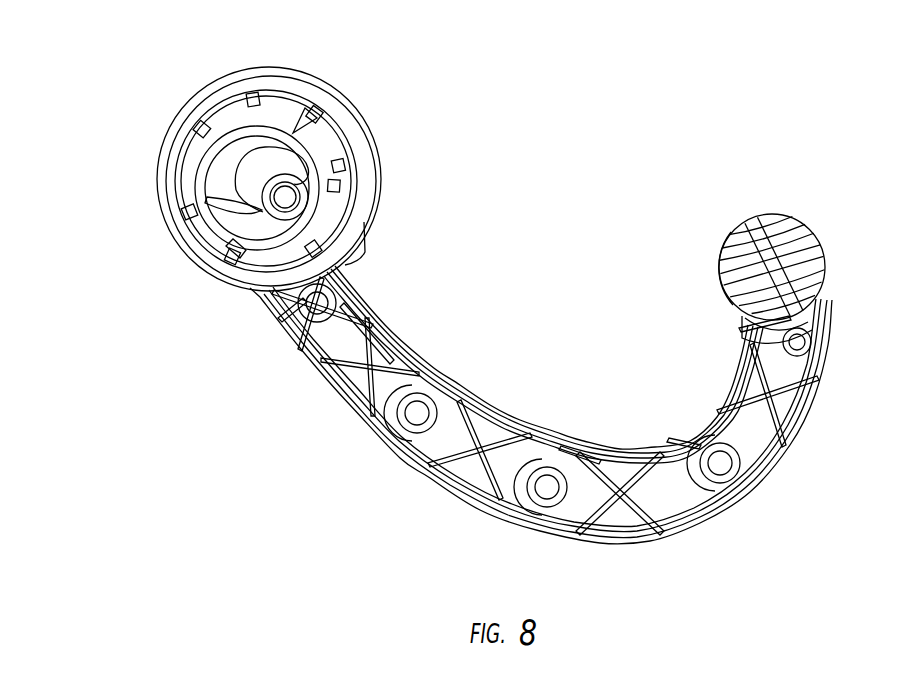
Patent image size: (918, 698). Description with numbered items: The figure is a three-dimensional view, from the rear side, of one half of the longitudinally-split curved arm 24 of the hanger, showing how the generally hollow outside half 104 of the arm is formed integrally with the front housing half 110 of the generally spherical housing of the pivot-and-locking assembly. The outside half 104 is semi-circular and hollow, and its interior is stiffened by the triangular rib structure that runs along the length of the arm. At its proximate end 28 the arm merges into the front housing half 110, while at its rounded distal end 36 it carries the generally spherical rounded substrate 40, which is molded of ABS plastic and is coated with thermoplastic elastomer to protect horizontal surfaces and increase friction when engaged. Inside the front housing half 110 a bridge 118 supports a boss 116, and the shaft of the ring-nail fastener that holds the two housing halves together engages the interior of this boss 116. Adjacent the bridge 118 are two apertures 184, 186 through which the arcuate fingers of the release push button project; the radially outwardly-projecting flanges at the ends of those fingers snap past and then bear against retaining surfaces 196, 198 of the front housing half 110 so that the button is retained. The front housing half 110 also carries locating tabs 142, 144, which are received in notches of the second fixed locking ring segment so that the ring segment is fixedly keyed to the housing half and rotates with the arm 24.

The curved arm 24 is at (335, 457).
The proximate end 28 is at (375, 281).
The distal end 36 is at (688, 363).
The rounded substrate 40 is at (798, 215).
The outside half 104 is at (700, 525).
The front housing half 110 is at (260, 68).
The boss 116 is at (310, 158).
The bridge 118 is at (220, 168).
The locating tab 142 is at (330, 222).
The locating tab 144 is at (237, 225).
The aperture 184 is at (280, 160).
The aperture 186 is at (240, 222).
The retaining surface 196 is at (233, 130).
The retaining surface 198 is at (260, 245).